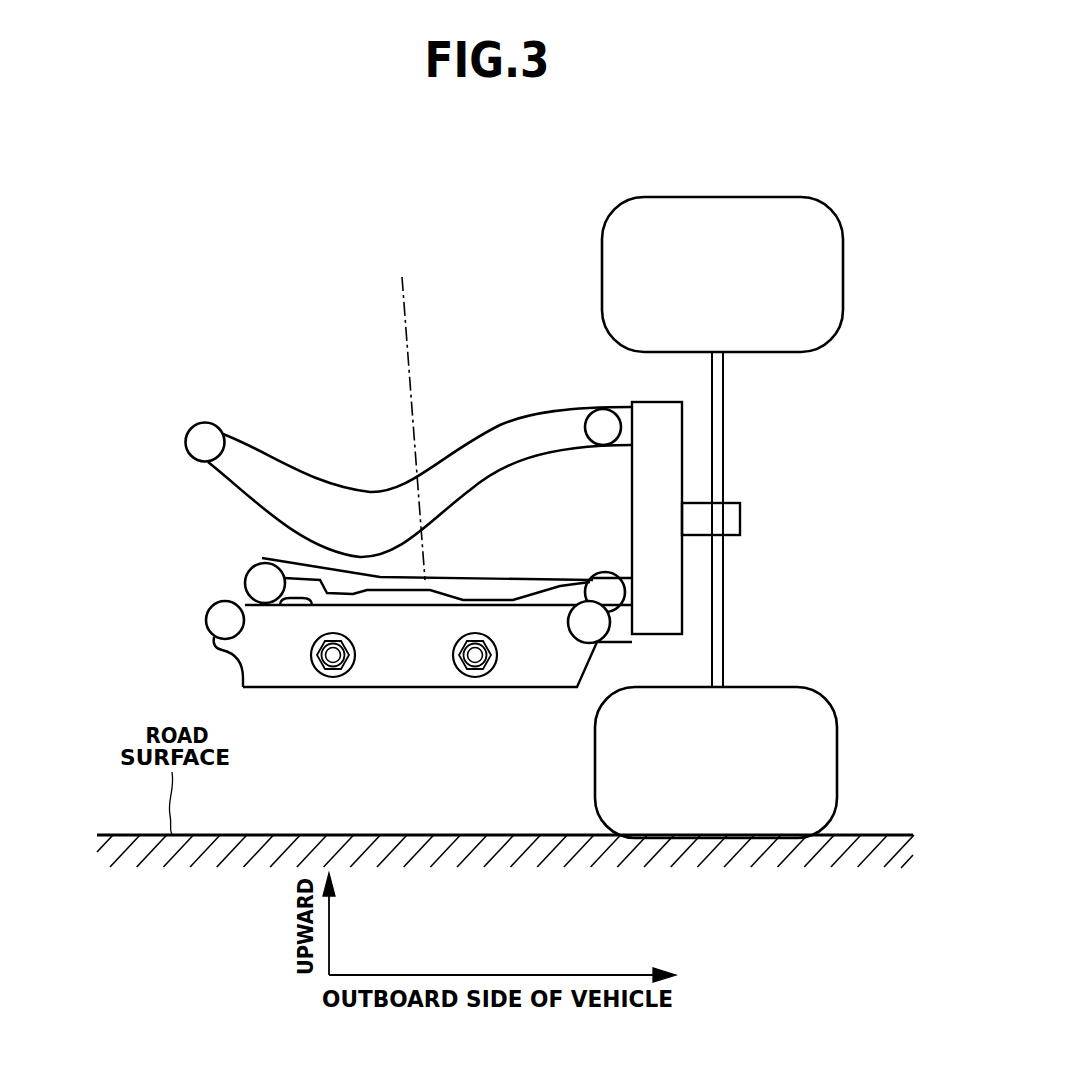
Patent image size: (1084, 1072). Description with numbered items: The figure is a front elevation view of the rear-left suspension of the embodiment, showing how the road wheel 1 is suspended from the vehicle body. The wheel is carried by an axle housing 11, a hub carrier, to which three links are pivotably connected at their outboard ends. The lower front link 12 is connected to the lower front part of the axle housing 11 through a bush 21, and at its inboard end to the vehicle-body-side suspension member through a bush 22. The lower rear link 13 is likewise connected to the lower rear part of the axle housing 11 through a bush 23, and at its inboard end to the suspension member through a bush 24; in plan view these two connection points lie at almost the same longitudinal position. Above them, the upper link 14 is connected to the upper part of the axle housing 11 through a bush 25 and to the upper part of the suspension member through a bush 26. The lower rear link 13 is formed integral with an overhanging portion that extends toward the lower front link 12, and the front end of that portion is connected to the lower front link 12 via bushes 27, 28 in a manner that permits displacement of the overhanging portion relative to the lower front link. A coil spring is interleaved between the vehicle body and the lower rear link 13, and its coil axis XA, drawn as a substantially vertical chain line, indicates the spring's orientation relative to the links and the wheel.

The road wheel 1 is at (820, 286).
The axle housing 11 is at (665, 455).
The lower front link 12 is at (407, 670).
The lower rear link 13 is at (497, 588).
The upper link 14 is at (460, 468).
The bush 21 is at (583, 627).
The bush 22 is at (217, 620).
The bush 23 is at (605, 594).
The bush 24 is at (260, 580).
The bush 25 is at (601, 418).
The bush 26 is at (204, 436).
The bush 27 is at (477, 678).
The bush 28 is at (333, 678).
The coil axis XA is at (412, 320).